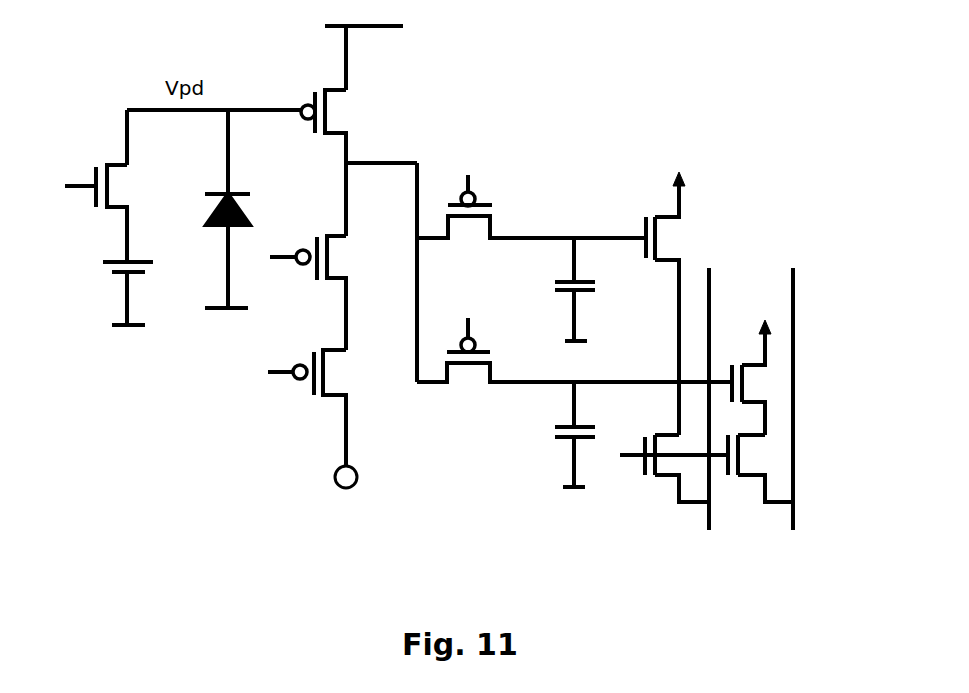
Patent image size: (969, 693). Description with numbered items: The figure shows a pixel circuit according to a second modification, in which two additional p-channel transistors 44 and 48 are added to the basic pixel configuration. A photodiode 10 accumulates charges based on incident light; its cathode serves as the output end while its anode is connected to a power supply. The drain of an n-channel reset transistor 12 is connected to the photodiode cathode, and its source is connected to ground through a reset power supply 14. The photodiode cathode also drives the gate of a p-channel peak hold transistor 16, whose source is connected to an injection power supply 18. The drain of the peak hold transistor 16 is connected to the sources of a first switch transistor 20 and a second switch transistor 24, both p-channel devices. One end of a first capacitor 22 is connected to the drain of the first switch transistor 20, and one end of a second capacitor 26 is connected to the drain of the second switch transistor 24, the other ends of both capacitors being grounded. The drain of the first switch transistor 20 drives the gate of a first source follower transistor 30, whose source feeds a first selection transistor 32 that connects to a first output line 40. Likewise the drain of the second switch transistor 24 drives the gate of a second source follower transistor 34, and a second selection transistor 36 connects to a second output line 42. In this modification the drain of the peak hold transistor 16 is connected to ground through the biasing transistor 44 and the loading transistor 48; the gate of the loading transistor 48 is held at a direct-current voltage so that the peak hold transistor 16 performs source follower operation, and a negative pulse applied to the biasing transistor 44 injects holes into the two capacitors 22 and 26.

The photodiode 10 is at (207, 226).
The reset transistor 12 is at (92, 196).
The reset power supply 14 is at (103, 270).
The peak hold transistor 16 is at (312, 99).
The injection power supply 18 is at (403, 26).
The first switch transistor 20 is at (500, 214).
The first capacitor 22 is at (600, 285).
The second switch transistor 24 is at (480, 338).
The second capacitor 26 is at (600, 429).
The first source follower transistor 30 is at (683, 211).
The first selection transistor 32 is at (632, 466).
The second source follower transistor 34 is at (755, 384).
The second selection transistor 36 is at (763, 464).
The first output line 40 is at (712, 291).
The second output line 42 is at (800, 312).
The bias transistor 44 is at (312, 277).
The load transistor 48 is at (300, 405).